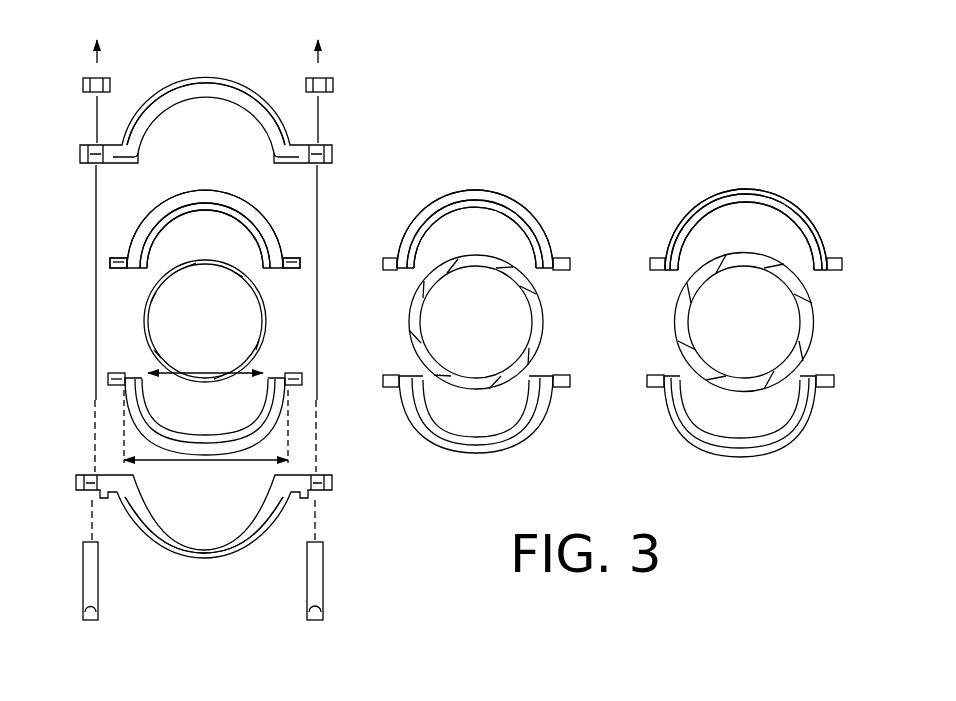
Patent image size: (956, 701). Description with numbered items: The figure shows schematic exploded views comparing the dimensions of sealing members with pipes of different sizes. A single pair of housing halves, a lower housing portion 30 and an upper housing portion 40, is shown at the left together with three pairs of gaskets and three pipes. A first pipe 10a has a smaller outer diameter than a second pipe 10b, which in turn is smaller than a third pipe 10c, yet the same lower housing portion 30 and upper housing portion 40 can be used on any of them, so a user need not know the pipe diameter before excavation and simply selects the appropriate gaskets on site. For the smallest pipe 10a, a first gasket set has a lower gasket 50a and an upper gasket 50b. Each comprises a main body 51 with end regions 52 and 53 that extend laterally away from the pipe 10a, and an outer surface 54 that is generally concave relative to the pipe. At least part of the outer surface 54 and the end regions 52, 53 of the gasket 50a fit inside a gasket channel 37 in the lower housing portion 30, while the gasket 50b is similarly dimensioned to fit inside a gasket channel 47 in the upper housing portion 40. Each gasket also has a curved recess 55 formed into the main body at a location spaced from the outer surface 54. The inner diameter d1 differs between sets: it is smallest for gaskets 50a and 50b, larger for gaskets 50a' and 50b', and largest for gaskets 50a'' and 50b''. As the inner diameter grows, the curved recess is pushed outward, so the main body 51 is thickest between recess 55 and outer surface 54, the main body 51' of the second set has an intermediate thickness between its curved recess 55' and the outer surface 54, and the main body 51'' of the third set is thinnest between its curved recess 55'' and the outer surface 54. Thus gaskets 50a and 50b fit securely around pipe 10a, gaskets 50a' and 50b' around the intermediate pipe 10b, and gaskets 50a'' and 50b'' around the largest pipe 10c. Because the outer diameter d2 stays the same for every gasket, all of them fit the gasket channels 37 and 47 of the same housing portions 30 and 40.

The upper housing portion 40 is at (174, 78).
The gasket channel 47 is at (229, 92).
The outer surface 54 is at (213, 190).
The main body 51 is at (221, 227).
The curved recess 55 is at (256, 238).
The gasket 50b is at (164, 226).
The end region 52 is at (115, 268).
The end region 53 is at (287, 270).
The first pipe 10a is at (145, 328).
The inner diameter d1 is at (207, 372).
The gasket 50a is at (166, 421).
The outer diameter d2 is at (206, 443).
The lower housing portion 30 is at (177, 562).
The gasket channel 37 is at (224, 546).
The gasket 50b' is at (476, 199).
The main body 51' is at (496, 216).
The curved recess 55' is at (510, 235).
The second pipe 10b is at (539, 341).
The gasket 50a' is at (476, 446).
The gasket 50b'' is at (746, 199).
The main body 51'' is at (757, 219).
The curved recess 55'' is at (773, 236).
The third pipe 10c is at (807, 316).
The gasket 50a'' is at (740, 447).